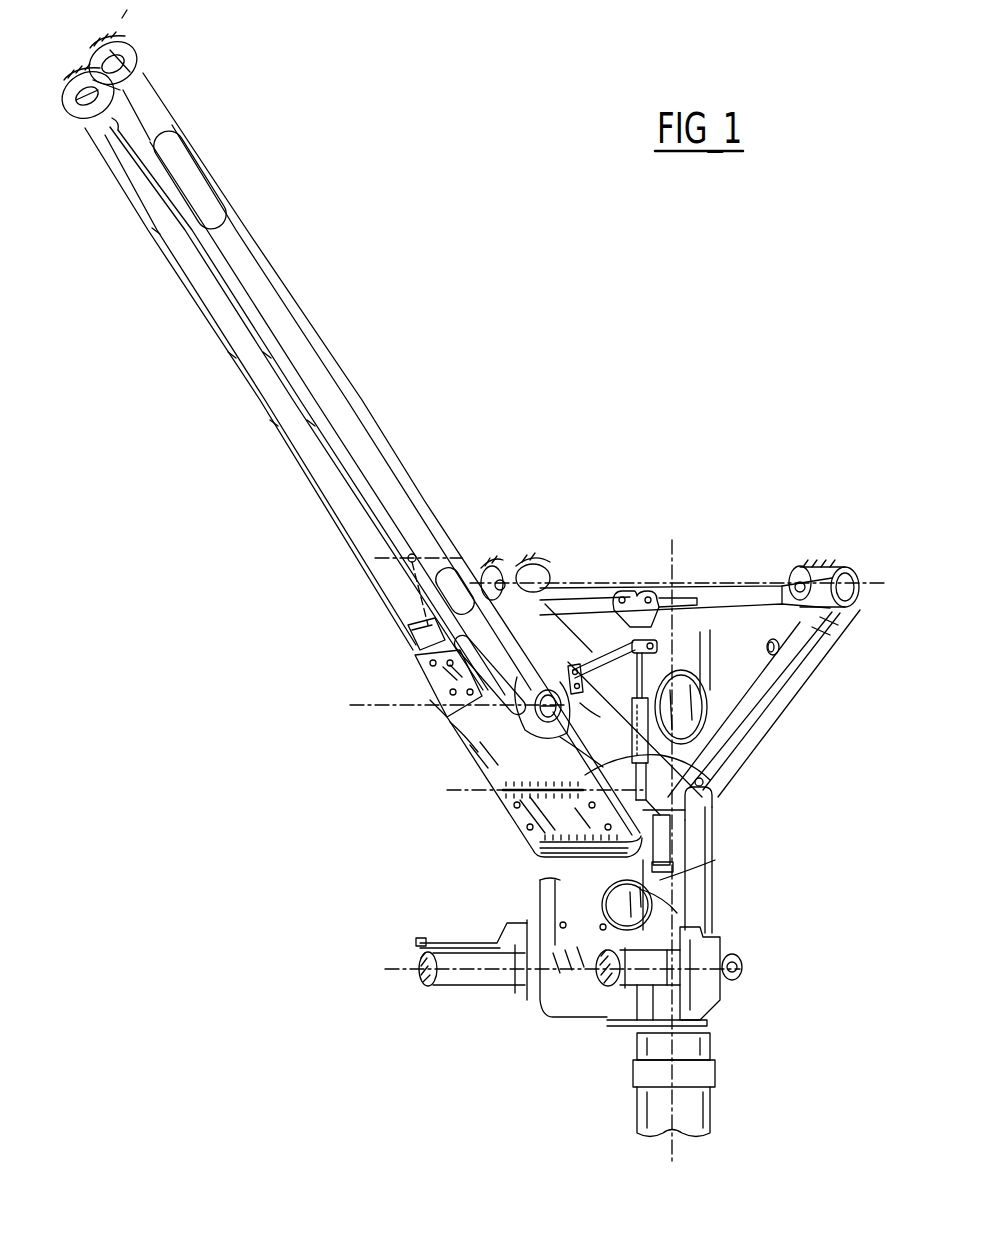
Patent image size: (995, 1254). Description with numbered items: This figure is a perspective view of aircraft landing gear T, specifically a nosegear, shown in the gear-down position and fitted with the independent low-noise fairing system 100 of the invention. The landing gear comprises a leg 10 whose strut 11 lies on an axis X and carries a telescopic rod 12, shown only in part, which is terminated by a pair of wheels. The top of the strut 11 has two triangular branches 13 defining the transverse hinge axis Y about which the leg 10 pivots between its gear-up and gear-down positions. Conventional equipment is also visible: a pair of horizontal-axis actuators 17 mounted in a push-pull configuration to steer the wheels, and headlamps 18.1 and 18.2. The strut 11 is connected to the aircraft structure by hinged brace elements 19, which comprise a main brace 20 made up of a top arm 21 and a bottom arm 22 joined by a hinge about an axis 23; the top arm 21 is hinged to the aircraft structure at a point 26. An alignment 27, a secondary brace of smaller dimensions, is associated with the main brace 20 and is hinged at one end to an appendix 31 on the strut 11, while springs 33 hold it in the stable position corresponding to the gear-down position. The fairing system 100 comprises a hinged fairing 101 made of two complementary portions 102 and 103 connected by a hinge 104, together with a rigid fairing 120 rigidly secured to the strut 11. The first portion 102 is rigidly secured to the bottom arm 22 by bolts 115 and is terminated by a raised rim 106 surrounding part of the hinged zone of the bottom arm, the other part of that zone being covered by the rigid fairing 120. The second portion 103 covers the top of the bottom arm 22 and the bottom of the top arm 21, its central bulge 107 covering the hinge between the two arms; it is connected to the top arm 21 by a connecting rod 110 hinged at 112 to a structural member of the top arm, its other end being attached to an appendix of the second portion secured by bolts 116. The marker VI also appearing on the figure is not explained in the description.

The leg 10 is at (753, 832).
The strut 11 is at (700, 897).
The telescopic rod 12 is at (690, 1110).
The triangular branches 13 is at (830, 633).
The horizontal axis actuators 17 is at (470, 977).
The headlamp 18.1 is at (620, 906).
The headlamp 18.2 is at (693, 707).
The hinged brace elements 19 is at (486, 473).
The main brace 20 is at (305, 510).
The top arm 21 is at (348, 390).
The bottom arm 22 is at (690, 783).
The hinge axis 23 is at (414, 707).
The hinge point 26 is at (85, 122).
The alignment 27 is at (588, 654).
The appendix 31 is at (683, 650).
The springs 33 is at (690, 813).
The independent low-noise fairing system 100 is at (512, 862).
The hinged fairing 101 is at (462, 772).
The first portion 102 is at (547, 802).
The second portion 103 is at (480, 740).
The hinge 104 is at (500, 775).
The raised edge or rim 106 is at (535, 841).
The central bulge 107 is at (450, 730).
The connecting rod 110 is at (406, 625).
The hinge point 112 is at (418, 556).
The bolts 115 is at (683, 857).
The bolts 116 is at (416, 658).
The rigid fairing 120 is at (575, 984).
The axis X is at (672, 546).
The transverse hinge axis Y is at (850, 566).
The view direction VI is at (508, 342).
The aircraft landing gear T is at (243, 660).